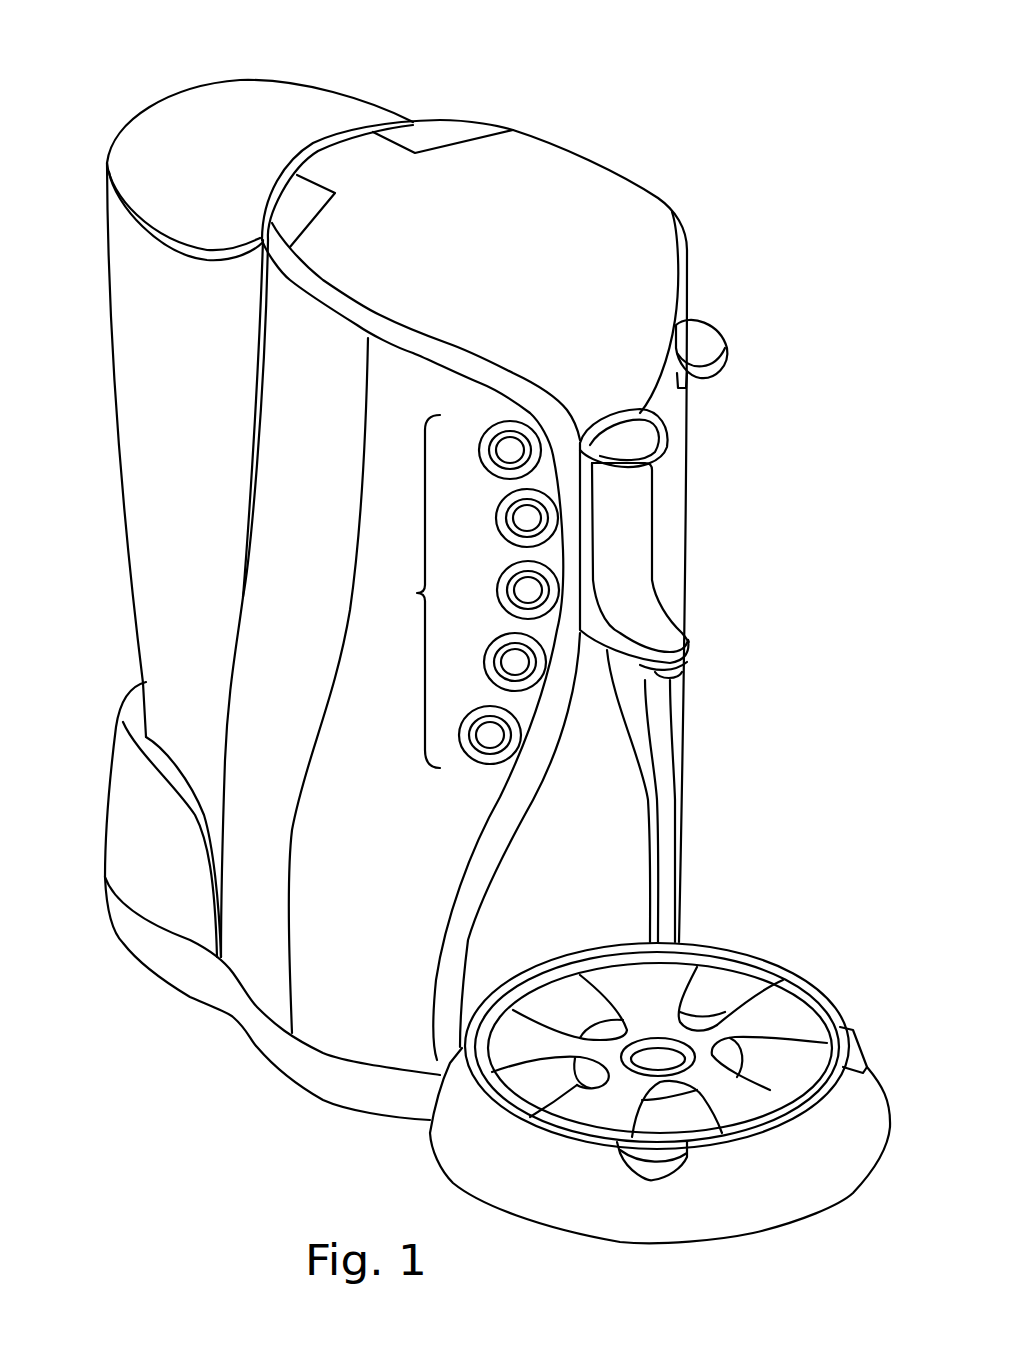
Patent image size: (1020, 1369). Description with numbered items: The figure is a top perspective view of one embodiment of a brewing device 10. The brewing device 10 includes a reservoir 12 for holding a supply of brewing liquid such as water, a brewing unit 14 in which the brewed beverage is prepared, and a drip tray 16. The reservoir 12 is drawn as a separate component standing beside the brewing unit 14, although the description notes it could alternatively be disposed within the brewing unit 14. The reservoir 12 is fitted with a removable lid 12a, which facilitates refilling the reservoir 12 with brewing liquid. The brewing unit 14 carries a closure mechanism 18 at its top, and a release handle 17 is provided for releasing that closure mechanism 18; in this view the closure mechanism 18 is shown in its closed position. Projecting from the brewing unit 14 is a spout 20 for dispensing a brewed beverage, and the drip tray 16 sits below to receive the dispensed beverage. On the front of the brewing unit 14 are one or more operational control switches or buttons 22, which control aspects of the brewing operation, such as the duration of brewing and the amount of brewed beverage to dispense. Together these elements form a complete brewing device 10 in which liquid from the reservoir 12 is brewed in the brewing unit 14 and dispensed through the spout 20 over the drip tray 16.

The brewing device 10 is at (704, 79).
The reservoir 12 is at (150, 406).
The removable lid 12a is at (170, 128).
The brewing unit 14 is at (355, 1002).
The drip tray 16 is at (822, 1170).
The release handle 17 is at (707, 345).
The closure mechanism 18 is at (593, 200).
The spout 20 is at (633, 538).
The operational control switches or buttons 22 is at (417, 593).